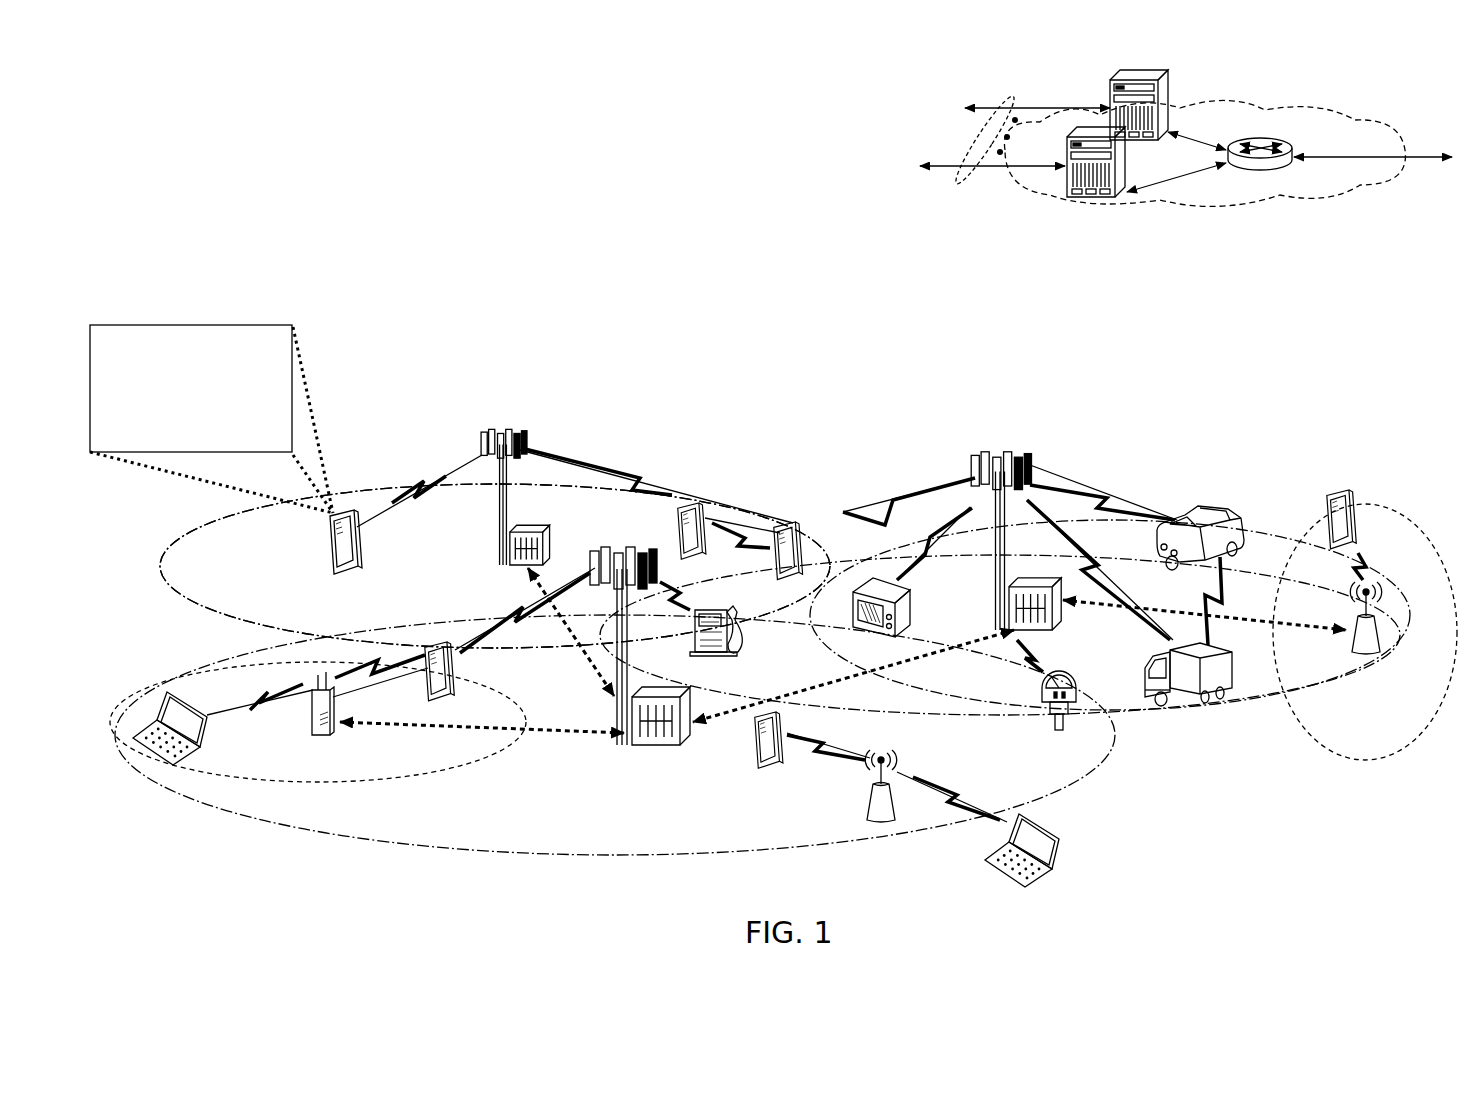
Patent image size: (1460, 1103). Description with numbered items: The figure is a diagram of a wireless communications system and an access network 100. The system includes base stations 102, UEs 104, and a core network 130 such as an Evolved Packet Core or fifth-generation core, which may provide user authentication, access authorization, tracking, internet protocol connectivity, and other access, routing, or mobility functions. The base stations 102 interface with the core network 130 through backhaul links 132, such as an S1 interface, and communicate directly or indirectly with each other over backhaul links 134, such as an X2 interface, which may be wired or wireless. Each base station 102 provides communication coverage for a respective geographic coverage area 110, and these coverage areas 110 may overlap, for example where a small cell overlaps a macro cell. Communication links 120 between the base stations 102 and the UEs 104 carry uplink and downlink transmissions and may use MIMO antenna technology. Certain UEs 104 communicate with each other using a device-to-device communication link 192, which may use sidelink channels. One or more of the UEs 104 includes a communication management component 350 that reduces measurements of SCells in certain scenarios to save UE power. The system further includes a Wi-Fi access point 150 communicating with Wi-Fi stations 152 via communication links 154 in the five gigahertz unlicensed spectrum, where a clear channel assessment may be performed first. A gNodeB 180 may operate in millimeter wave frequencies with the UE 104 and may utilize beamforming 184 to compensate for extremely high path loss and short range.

The access network 100 is at (182, 105).
The base station 102 is at (503, 541).
The UE 104 is at (354, 570).
The geographic coverage area 110 is at (218, 611).
The communication link 120 is at (422, 480).
The core network 130 is at (1228, 214).
The backhaul link 132 is at (957, 172).
The backhaul link 134 is at (427, 726).
The Wi-Fi access point 150 is at (880, 824).
The Wi-Fi station 152 is at (755, 741).
The communication link 154 is at (824, 748).
The gNodeB 180 is at (1383, 640).
The beamforming 184 is at (1370, 572).
The device-to-device communication link 192 is at (748, 536).
The communication management component 350 is at (211, 419).